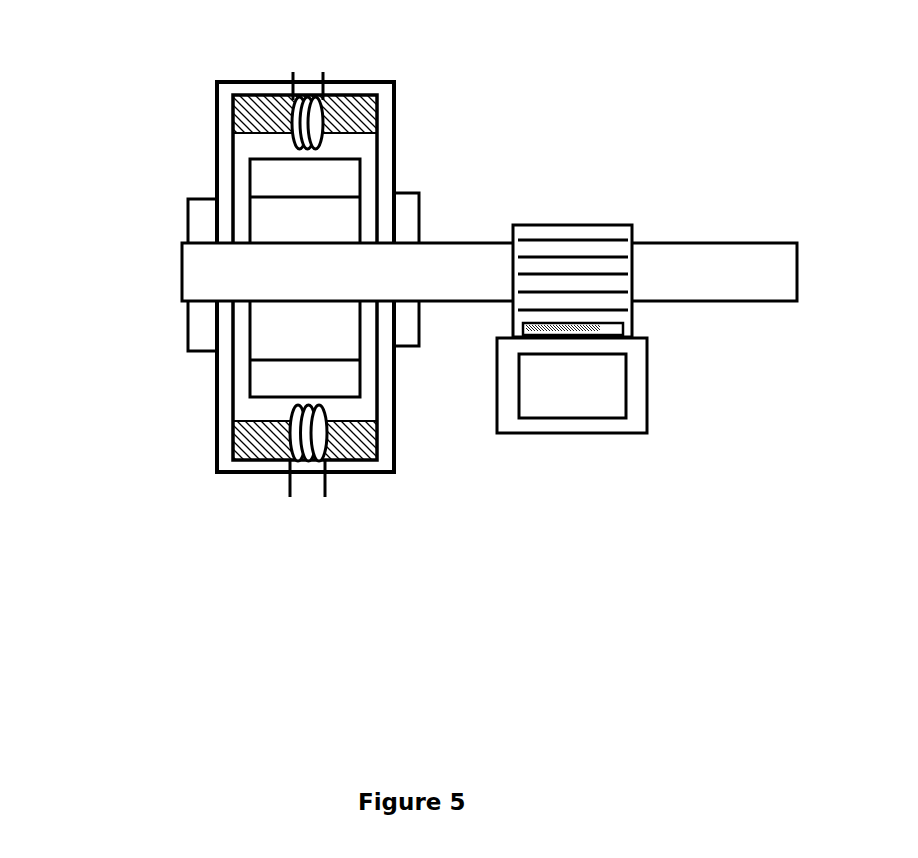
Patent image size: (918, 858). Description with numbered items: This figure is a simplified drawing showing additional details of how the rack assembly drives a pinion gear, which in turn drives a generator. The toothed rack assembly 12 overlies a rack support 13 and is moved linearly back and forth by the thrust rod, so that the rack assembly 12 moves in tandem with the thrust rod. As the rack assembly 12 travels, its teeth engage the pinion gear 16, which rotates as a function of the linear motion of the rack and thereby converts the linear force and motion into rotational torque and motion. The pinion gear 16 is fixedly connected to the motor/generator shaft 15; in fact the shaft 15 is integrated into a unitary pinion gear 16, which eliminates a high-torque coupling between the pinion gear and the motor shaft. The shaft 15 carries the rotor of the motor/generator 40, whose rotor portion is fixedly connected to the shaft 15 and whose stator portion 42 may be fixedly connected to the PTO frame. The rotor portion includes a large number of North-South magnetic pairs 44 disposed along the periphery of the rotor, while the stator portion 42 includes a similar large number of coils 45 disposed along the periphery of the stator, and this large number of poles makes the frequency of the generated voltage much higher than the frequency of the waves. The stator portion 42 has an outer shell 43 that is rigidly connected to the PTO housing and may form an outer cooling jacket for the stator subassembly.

The motor/generator 40 is at (307, 296).
The outer shell 43 is at (216, 430).
The stator portion 42 is at (377, 453).
The North-South magnetic pairs 44 is at (343, 378).
The coils 45 is at (320, 122).
The motor/generator shaft 15 is at (423, 272).
The pinion gear 16 is at (579, 228).
The rack assembly 12 is at (602, 325).
The rack support 13 is at (637, 422).